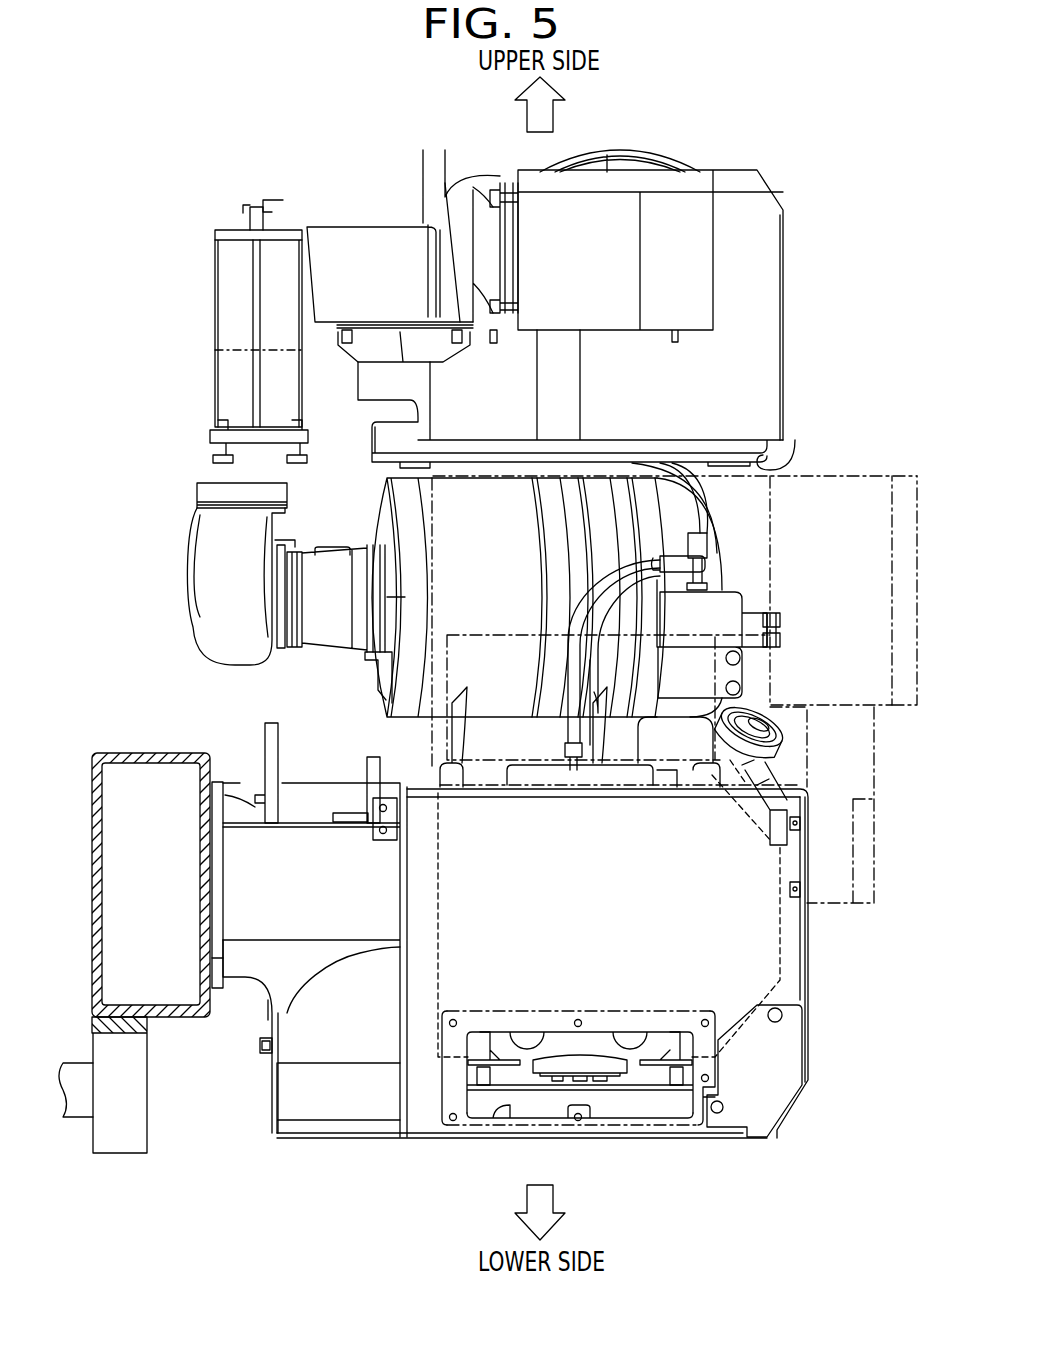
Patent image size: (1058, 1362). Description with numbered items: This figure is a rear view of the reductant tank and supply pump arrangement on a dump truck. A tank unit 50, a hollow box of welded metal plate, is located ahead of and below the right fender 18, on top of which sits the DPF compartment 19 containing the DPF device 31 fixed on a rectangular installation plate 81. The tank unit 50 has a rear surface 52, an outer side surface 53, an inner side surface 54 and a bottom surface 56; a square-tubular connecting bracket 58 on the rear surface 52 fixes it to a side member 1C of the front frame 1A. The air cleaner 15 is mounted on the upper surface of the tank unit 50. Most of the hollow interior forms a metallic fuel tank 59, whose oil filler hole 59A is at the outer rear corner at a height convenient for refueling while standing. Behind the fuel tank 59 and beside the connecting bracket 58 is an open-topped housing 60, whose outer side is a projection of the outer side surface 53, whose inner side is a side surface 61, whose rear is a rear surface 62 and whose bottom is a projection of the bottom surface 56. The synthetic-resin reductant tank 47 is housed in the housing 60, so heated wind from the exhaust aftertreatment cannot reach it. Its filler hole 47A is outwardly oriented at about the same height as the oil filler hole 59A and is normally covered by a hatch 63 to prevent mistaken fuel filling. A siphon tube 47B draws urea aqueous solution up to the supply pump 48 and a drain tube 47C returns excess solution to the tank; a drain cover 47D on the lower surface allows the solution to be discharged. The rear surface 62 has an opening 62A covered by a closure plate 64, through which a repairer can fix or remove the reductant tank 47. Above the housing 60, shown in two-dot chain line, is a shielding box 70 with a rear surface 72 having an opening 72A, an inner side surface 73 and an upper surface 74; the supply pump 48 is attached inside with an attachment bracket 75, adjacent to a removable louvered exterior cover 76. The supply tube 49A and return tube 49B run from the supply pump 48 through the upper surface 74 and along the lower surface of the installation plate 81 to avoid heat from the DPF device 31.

The front frame 1A is at (148, 750).
The side member 1C is at (141, 923).
The air cleaner 15 is at (398, 513).
The right fender 18 is at (814, 382).
The DPF compartment 19 is at (770, 240).
The DPF device 31 is at (607, 157).
The reductant tank 47 is at (790, 935).
The filler hole 47A is at (805, 757).
The siphon tube 47B is at (590, 588).
The drain tube 47C is at (595, 608).
The drain cover 47D is at (587, 1077).
The supply pump 48 is at (708, 612).
The supply tube 49A is at (658, 472).
The return tube 49B is at (689, 452).
The tank unit 50 is at (830, 1075).
The rear surface 52 is at (343, 1107).
The outer side surface 53 is at (807, 983).
The inner side surface 54 is at (275, 1088).
The bottom surface 56 is at (383, 1138).
The connecting bracket 58 is at (267, 917).
The fuel tank 59 is at (307, 1093).
The oil filler hole 59A is at (770, 722).
The housing 60 is at (788, 770).
The side surface 61 is at (403, 888).
The rear surface 62 is at (413, 996).
The opening 62A is at (510, 1110).
The hatch 63 is at (880, 838).
The closure plate 64 is at (545, 1008).
The shielding box 70 is at (787, 510).
The rear surface 72 is at (770, 555).
The opening 72A is at (472, 635).
The inner side surface 73 is at (395, 650).
The upper surface 74 is at (707, 455).
The attachment bracket 75 is at (733, 672).
The exterior cover 76 is at (903, 478).
The installation plate 81 is at (778, 455).